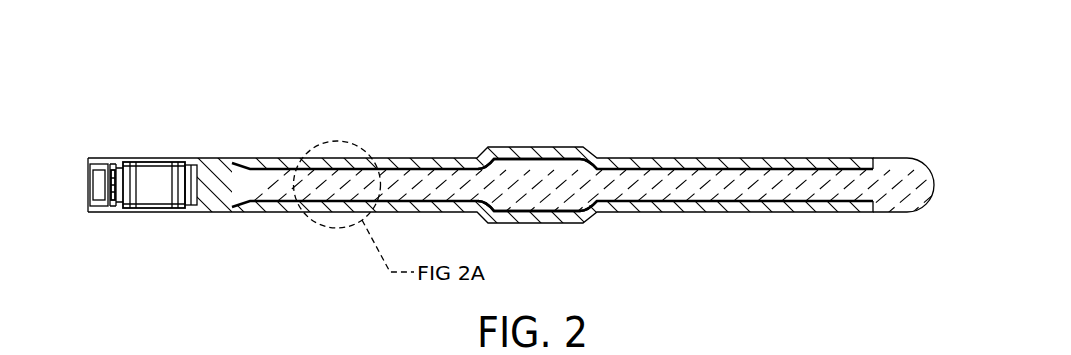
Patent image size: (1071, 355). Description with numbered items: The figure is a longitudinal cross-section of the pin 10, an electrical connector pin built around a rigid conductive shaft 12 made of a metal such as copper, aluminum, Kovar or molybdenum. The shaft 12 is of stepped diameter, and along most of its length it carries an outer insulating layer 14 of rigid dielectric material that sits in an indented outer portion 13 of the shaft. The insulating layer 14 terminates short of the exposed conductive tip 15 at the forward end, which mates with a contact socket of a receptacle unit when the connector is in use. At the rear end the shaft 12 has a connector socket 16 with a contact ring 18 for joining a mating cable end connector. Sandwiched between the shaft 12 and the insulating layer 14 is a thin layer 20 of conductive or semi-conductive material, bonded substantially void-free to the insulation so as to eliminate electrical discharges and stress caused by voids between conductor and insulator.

The pin 10 is at (742, 127).
The conductive shaft 12 is at (537, 185).
The indented outer portion 13 is at (790, 192).
The outer insulating layer 14 is at (617, 164).
The exposed conductive tip 15 is at (932, 172).
The connector socket 16 is at (155, 185).
The contact ring 18 is at (157, 203).
The layer of conductive or semi-conductive material 20 is at (424, 172).